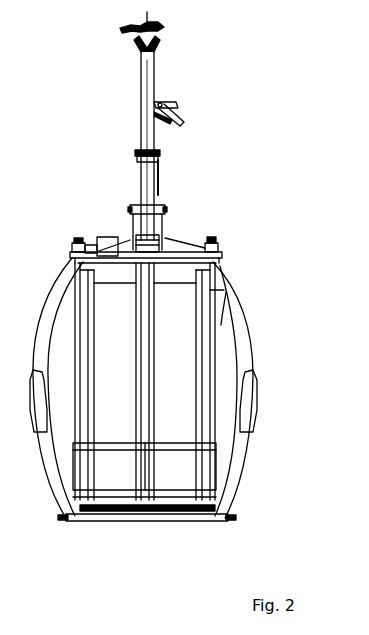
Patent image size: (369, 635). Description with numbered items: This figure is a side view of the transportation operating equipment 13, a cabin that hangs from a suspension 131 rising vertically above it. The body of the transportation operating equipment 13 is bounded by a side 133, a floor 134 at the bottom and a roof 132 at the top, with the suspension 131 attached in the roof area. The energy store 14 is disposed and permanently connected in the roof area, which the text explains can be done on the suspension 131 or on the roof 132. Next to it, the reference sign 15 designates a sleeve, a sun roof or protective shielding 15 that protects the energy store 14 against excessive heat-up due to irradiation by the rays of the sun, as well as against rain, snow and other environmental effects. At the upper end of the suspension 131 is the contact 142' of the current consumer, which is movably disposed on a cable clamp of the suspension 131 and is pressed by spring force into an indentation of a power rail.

The transportation operating equipment 13 is at (250, 333).
The suspension 131 is at (152, 70).
The roof 132 is at (180, 258).
The side 133 is at (226, 292).
The floor 134 is at (128, 522).
The energy store 14 is at (108, 242).
The sleeve, sun roof or protective shielding 15 is at (78, 241).
The contact 142' is at (98, 38).